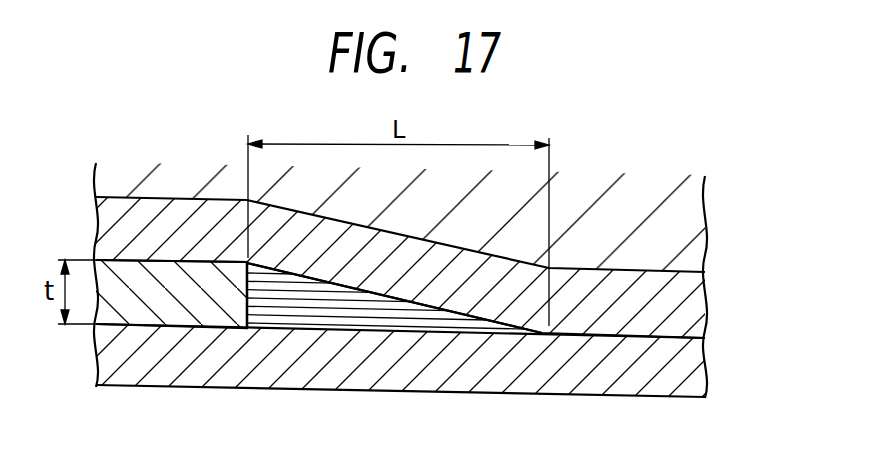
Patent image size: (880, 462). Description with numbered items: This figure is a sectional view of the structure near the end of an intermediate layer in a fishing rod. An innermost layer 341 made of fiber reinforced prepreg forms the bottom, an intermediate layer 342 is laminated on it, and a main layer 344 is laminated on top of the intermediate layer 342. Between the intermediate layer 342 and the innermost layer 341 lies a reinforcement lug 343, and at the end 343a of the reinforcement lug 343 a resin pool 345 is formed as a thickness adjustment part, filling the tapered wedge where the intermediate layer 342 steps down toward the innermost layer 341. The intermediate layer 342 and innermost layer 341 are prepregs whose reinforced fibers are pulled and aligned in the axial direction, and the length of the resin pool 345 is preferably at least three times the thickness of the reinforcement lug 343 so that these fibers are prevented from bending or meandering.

The innermost layer 341 is at (680, 360).
The intermediate layer 342 is at (693, 302).
The reinforcement lug 343 is at (173, 312).
The end of the reinforcement lug 343a is at (247, 292).
The main layer 344 is at (680, 207).
The resin pool 345 is at (380, 317).